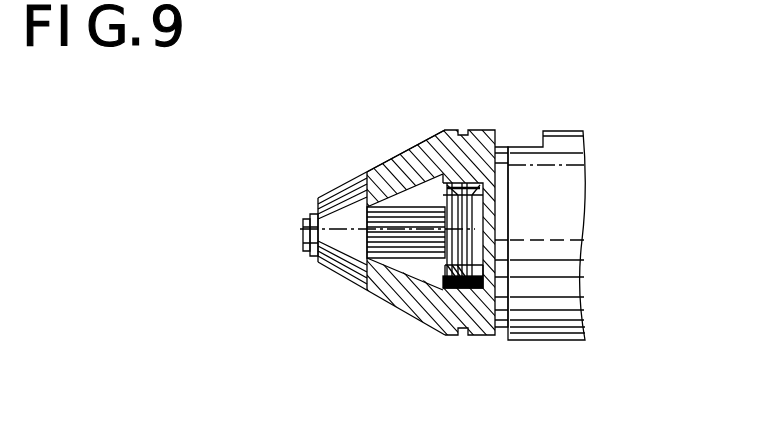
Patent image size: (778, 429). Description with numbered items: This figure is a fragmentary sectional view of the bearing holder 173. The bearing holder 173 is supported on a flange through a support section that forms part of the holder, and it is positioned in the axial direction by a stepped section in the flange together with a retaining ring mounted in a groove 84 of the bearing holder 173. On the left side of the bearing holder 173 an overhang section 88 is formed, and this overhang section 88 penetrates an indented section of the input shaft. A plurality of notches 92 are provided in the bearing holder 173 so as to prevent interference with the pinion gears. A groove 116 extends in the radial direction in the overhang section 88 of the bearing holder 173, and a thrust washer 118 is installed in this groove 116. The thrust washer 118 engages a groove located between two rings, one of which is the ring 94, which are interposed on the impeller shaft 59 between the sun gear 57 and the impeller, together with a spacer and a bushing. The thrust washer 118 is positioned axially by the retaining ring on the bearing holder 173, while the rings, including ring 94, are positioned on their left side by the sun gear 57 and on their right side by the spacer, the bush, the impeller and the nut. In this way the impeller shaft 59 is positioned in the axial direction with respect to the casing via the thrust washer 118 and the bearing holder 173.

The bearing holder 173 is at (338, 160).
The impeller shaft 59 is at (306, 222).
The overhang section 88 is at (342, 258).
The sun gear 57 is at (415, 205).
The notches 92 is at (382, 286).
The groove 84 is at (463, 133).
The groove 116 is at (498, 208).
The ring 94 is at (448, 292).
The thrust washer 118 is at (476, 272).